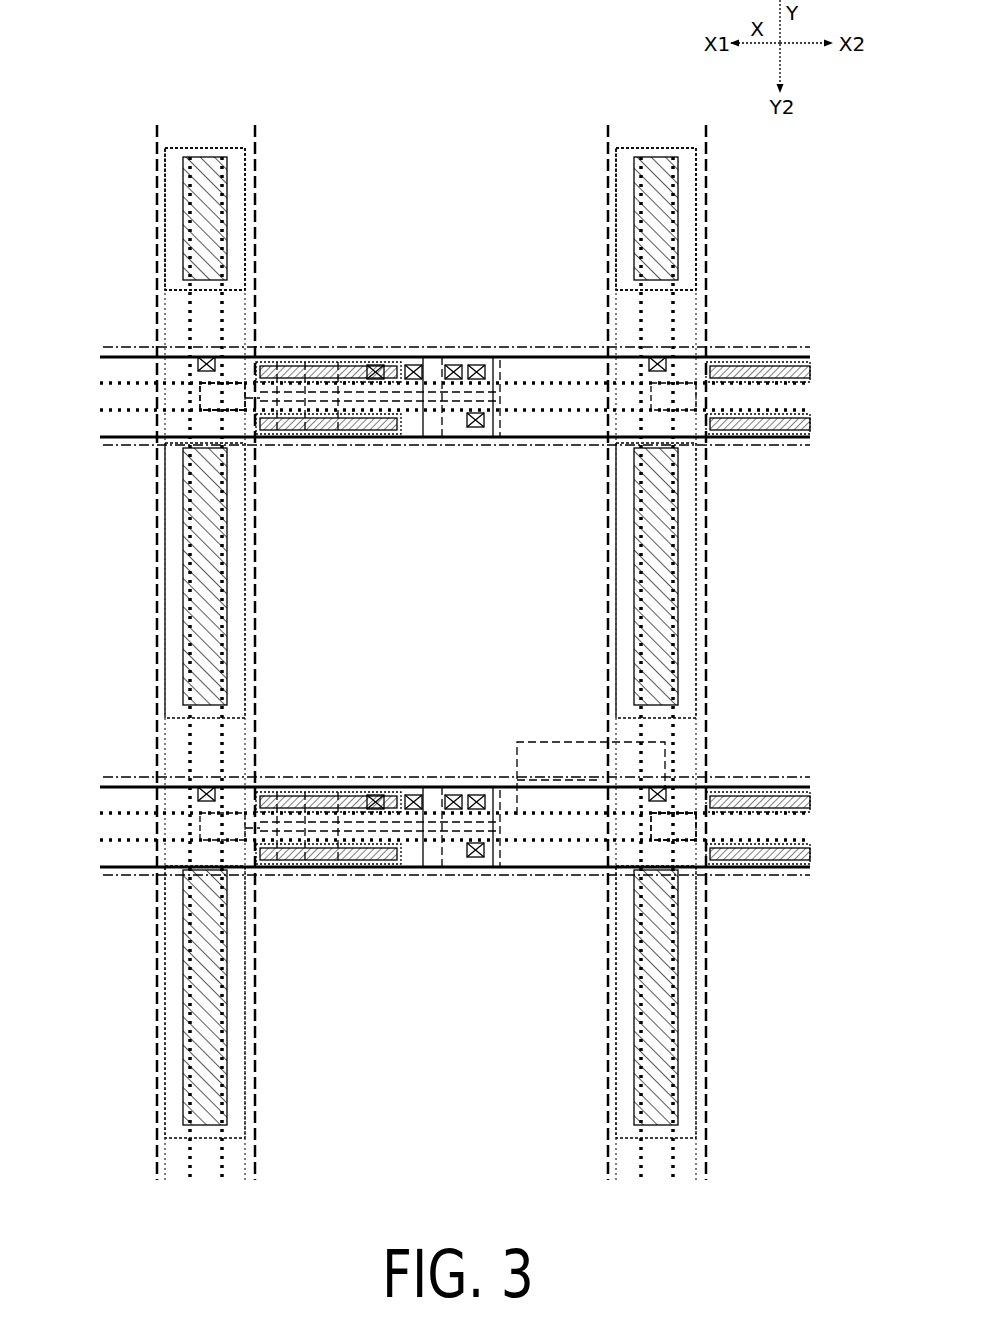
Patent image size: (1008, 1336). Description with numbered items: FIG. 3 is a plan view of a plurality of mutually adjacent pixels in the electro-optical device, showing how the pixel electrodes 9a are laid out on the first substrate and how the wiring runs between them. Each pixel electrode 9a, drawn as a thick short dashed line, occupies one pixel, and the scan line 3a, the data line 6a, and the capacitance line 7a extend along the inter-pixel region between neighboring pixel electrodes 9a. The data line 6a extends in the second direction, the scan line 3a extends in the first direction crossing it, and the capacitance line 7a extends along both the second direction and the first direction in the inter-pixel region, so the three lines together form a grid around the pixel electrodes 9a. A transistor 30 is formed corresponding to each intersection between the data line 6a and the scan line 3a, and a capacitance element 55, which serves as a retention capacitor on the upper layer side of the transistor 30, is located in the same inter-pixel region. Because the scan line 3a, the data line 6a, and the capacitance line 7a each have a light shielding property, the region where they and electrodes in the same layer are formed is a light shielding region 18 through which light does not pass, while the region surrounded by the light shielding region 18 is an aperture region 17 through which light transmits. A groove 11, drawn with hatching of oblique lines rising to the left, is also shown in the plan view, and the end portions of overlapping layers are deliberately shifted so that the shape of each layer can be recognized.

The scan line 3a is at (97, 357).
The data line 6a is at (157, 116).
The capacitance line 7a is at (165, 150).
The pixel electrode 9a is at (175, 212).
The groove 11 is at (228, 597).
The aperture region 17 is at (90, 310).
The light shielding region 18 is at (298, 702).
The transistor 30 is at (220, 416).
The capacitance element 55 is at (170, 543).